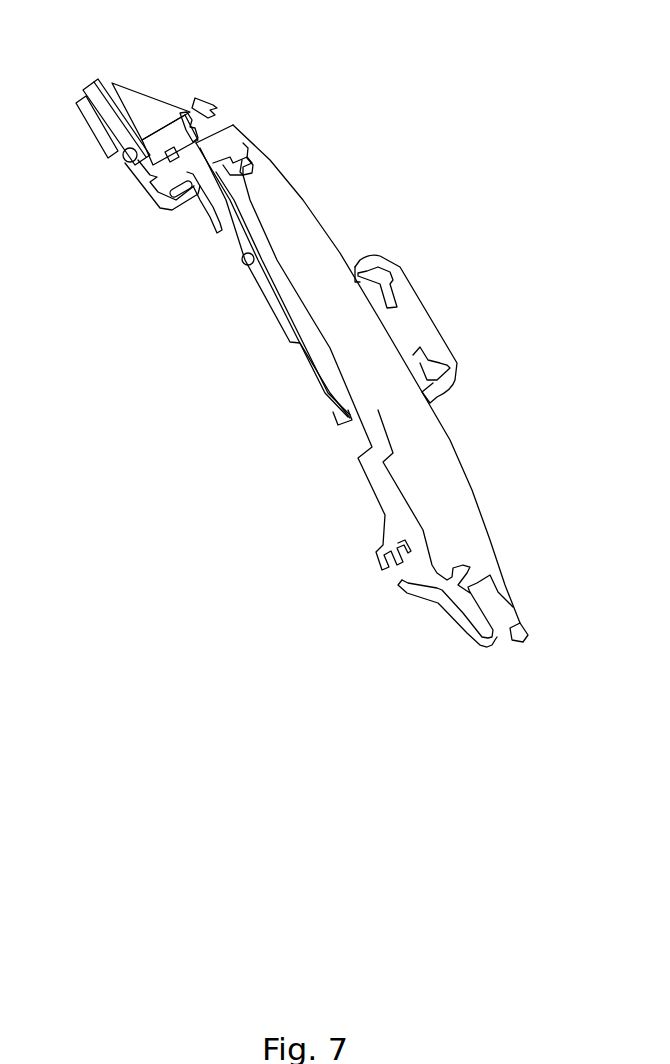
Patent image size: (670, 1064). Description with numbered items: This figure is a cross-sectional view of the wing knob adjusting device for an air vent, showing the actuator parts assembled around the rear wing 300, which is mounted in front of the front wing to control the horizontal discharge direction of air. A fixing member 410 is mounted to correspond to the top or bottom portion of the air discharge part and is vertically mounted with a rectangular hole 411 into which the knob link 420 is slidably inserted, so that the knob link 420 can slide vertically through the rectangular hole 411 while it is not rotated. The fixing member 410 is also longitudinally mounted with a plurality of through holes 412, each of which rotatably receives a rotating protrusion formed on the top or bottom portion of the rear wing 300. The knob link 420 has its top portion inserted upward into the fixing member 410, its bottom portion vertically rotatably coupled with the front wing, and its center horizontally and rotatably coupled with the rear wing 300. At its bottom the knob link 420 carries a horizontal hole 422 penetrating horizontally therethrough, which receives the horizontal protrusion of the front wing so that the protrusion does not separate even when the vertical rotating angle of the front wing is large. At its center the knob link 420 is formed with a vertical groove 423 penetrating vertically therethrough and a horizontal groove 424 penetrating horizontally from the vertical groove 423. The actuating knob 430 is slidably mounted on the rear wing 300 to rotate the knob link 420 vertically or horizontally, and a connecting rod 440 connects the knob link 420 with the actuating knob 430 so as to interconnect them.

The rear wing 300 is at (297, 200).
The fixing member 410 is at (125, 93).
The rectangular hole 411 is at (90, 97).
The through hole 412 is at (200, 100).
The knob link 420 is at (130, 160).
The horizontal hole 422 is at (172, 203).
The vertical groove 423 is at (186, 150).
The horizontal groove 424 is at (170, 157).
The actuating knob 430 is at (457, 363).
The connecting rod 440 is at (237, 243).